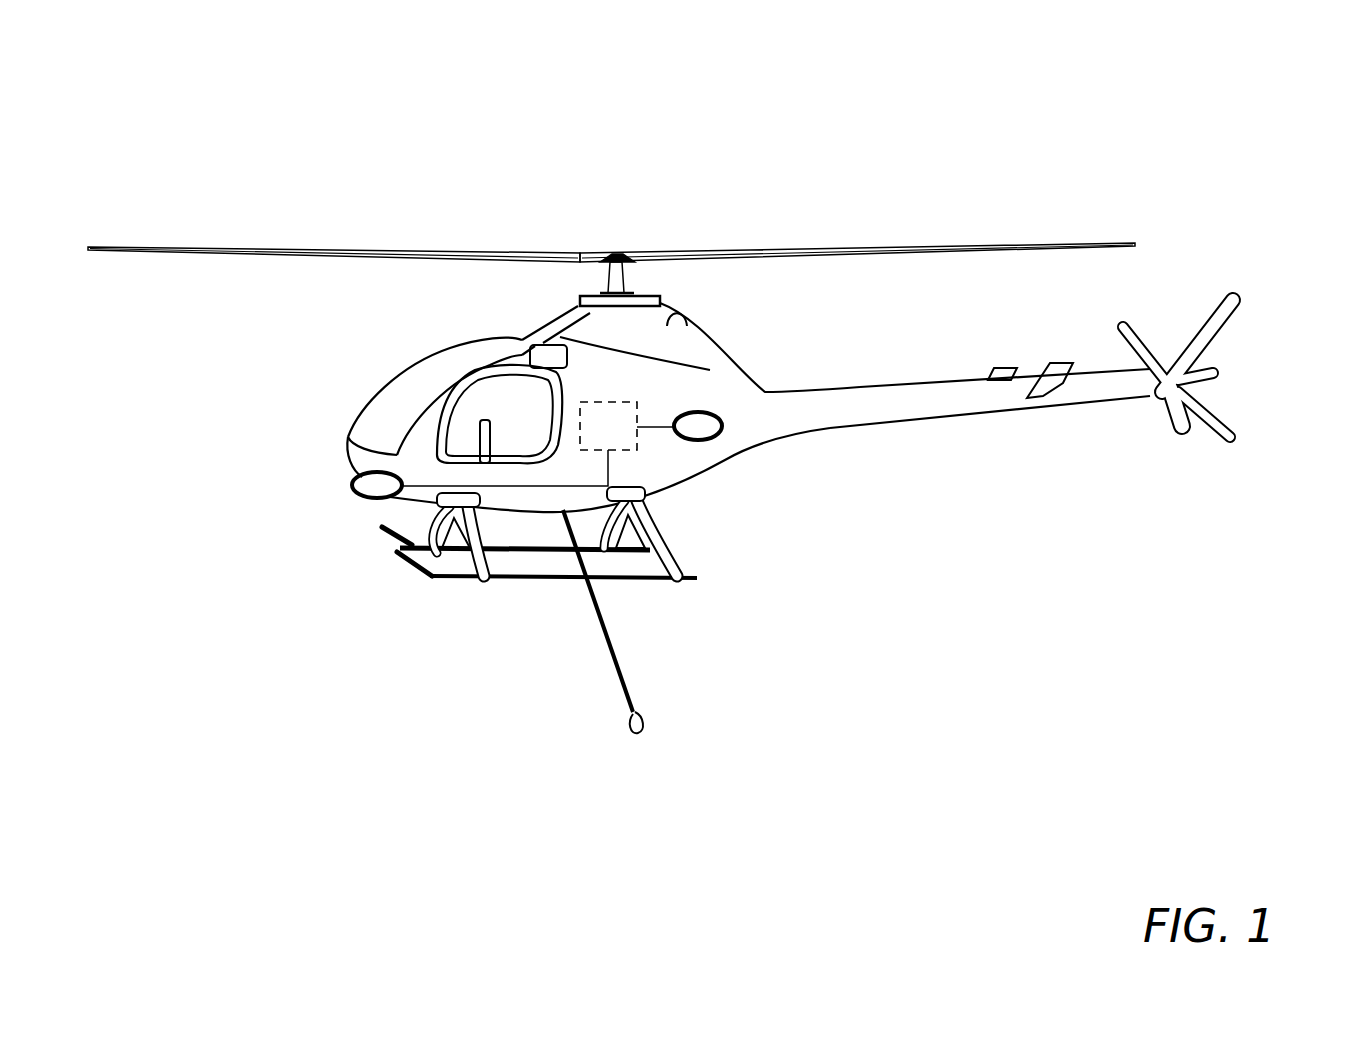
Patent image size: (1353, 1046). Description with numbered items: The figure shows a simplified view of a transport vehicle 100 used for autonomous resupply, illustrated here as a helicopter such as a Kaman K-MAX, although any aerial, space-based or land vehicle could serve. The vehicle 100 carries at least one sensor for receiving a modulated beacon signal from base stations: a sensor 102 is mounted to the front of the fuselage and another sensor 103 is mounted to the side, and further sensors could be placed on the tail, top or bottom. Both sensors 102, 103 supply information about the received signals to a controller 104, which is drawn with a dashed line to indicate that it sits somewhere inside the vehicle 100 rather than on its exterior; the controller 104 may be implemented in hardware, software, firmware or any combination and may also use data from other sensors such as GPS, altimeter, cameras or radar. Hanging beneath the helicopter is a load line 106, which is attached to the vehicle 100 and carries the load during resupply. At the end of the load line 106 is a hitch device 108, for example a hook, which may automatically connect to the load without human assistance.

The transport vehicle 100 is at (1205, 148).
The sensor 102 is at (370, 503).
The sensor 103 is at (723, 437).
The controller 104 is at (642, 452).
The load line 106 is at (617, 656).
The hitch device 108 is at (645, 718).